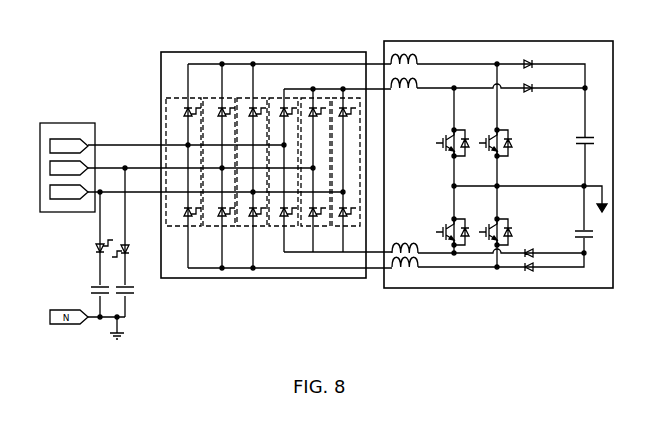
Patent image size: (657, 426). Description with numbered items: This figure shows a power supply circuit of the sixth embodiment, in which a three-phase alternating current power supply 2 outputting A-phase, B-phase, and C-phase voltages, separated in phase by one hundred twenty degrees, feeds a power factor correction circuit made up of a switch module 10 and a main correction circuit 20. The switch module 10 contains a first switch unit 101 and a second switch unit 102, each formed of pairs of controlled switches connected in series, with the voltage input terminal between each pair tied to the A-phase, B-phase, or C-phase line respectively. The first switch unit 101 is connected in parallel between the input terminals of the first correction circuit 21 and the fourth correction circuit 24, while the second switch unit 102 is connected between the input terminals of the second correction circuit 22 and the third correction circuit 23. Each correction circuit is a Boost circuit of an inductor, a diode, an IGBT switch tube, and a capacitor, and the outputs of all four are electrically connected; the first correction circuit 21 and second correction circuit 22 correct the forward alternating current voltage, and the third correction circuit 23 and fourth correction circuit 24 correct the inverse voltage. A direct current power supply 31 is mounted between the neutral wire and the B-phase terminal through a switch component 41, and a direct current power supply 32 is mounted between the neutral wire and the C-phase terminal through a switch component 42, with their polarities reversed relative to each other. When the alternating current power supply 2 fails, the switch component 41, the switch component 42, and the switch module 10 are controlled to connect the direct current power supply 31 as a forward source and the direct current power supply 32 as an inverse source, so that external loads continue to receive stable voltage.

The alternating current power supply 2 is at (57, 121).
The switch module 10 is at (248, 52).
The first switch unit 101 is at (250, 98).
The second switch unit 102 is at (350, 98).
The main correction circuit 20 is at (518, 41).
The first correction circuit 21 is at (469, 62).
The second correction circuit 22 is at (563, 86).
The third correction circuit 23 is at (562, 256).
The fourth correction circuit 24 is at (477, 274).
The direct current power supply 31 is at (88, 282).
The direct current power supply 32 is at (130, 290).
The switch component 41 is at (92, 247).
The switch component 42 is at (132, 247).